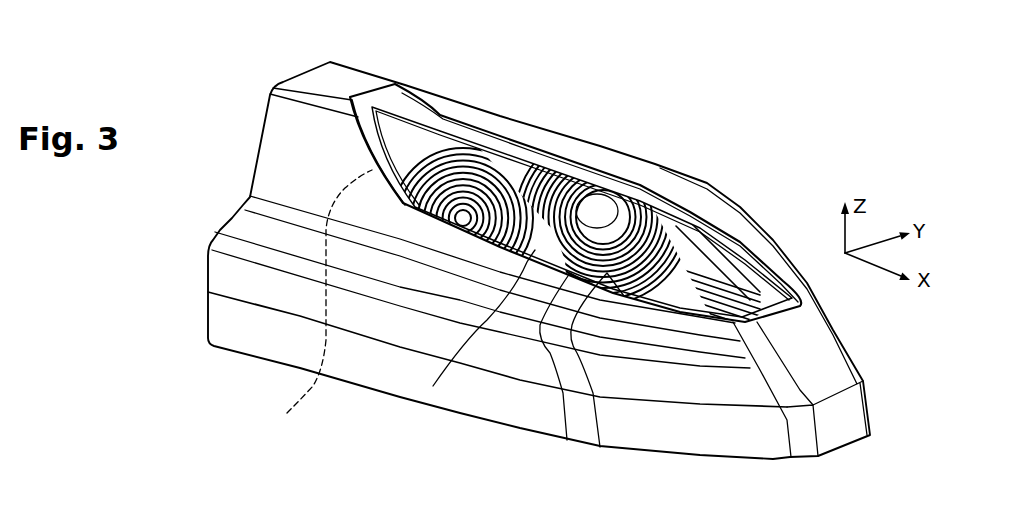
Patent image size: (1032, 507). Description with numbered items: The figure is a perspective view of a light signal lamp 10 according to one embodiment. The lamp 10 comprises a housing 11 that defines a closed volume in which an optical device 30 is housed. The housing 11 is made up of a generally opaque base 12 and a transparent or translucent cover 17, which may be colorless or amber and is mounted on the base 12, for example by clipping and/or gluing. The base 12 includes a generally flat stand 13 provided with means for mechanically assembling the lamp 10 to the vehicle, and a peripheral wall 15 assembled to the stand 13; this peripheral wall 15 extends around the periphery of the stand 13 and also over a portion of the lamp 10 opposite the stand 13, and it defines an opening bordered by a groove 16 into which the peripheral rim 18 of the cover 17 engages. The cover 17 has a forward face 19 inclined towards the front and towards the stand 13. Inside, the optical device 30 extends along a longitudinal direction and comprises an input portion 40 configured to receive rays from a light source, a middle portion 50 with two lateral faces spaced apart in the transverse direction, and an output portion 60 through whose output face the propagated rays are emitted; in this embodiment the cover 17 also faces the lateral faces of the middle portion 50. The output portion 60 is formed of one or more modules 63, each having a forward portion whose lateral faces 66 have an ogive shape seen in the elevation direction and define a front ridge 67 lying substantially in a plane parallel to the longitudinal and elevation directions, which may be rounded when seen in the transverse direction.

The light signal lamp 10 is at (812, 129).
The housing 11 is at (443, 40).
The base 12 is at (347, 82).
The stand 13 is at (265, 334).
The peripheral wall 15 is at (254, 231).
The groove 16 is at (291, 150).
The cover 17 is at (469, 117).
The peripheral rim 18 is at (372, 141).
The forward face 19 is at (743, 246).
The optical device 30 is at (541, 152).
The input portion 40 is at (314, 301).
The middle portion 50 is at (433, 386).
The output portion 60 is at (712, 218).
The module 63 is at (685, 236).
The lateral faces 66 is at (678, 211).
The front ridge 67 is at (660, 201).